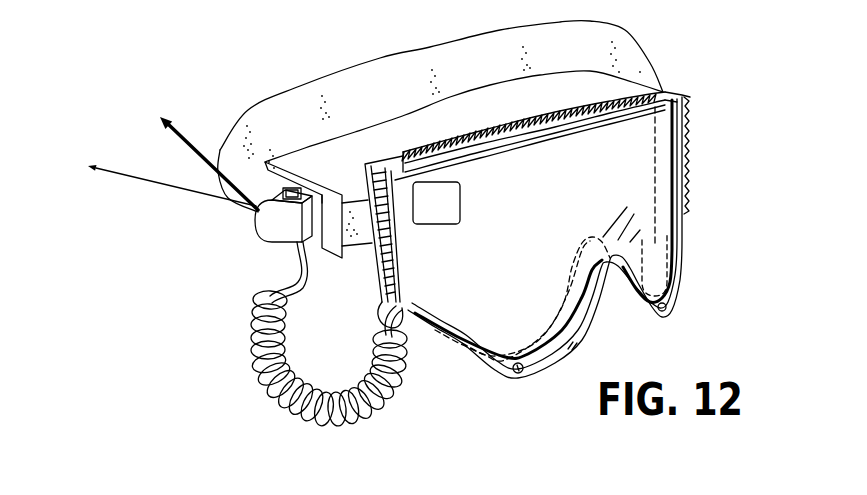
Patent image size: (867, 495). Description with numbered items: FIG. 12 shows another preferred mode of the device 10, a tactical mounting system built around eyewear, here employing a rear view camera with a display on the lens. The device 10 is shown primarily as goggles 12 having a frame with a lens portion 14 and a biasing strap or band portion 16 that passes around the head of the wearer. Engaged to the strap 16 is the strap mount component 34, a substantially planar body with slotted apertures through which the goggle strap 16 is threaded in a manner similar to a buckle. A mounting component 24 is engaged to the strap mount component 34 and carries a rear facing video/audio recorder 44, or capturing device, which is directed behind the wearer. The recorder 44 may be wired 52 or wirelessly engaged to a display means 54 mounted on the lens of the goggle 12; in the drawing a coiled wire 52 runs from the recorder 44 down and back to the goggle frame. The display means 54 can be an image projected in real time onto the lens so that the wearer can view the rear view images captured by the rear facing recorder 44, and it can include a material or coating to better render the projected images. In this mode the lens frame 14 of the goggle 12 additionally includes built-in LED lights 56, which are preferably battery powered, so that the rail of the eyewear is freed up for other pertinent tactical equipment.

The device 10 is at (258, 53).
The goggles 12 is at (462, 363).
The lens portion 14 is at (680, 285).
The strap 16 is at (380, 57).
The mounting component 24 is at (290, 240).
The strap mount component 34 is at (327, 194).
The rear facing video/audio recorder 44 is at (252, 222).
The wire 52 is at (268, 370).
The display means 54 is at (462, 205).
The LED lights 56 is at (667, 311).